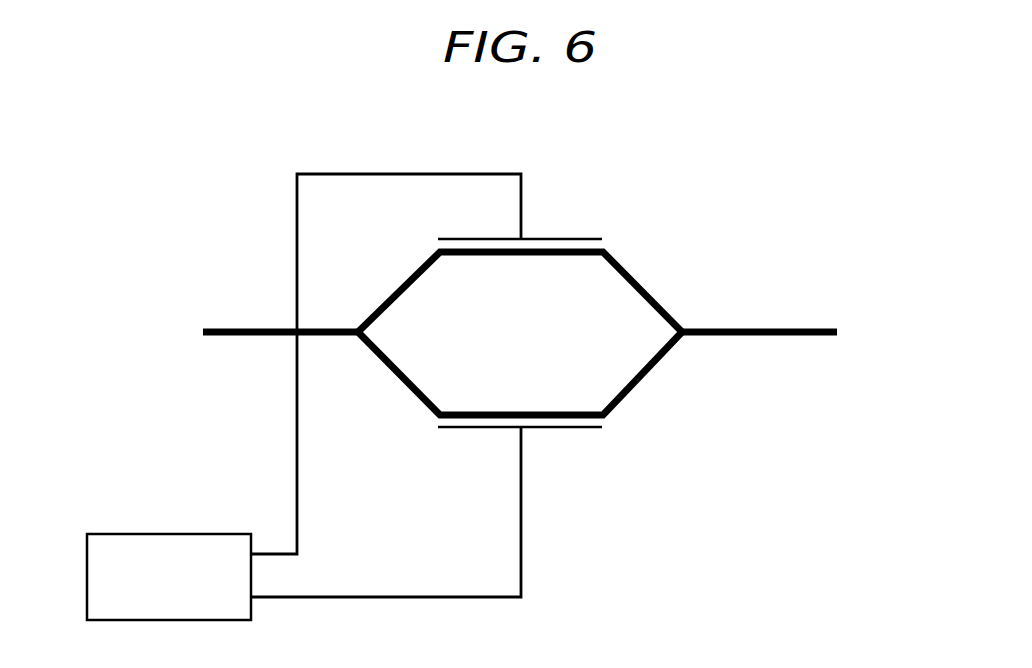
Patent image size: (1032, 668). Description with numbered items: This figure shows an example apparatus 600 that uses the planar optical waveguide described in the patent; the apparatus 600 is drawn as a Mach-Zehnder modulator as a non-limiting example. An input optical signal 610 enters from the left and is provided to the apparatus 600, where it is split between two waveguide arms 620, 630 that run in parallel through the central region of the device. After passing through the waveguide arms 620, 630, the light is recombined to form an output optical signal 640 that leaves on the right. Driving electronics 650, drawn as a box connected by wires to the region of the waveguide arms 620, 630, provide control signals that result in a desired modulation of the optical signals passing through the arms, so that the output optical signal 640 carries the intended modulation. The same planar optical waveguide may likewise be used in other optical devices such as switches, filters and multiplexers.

The apparatus 600 is at (748, 139).
The input optical signal 610 is at (162, 332).
The waveguide arm 620 is at (638, 282).
The waveguide arm 630 is at (638, 383).
The output optical signal 640 is at (921, 332).
The driving electronics 650 is at (87, 575).